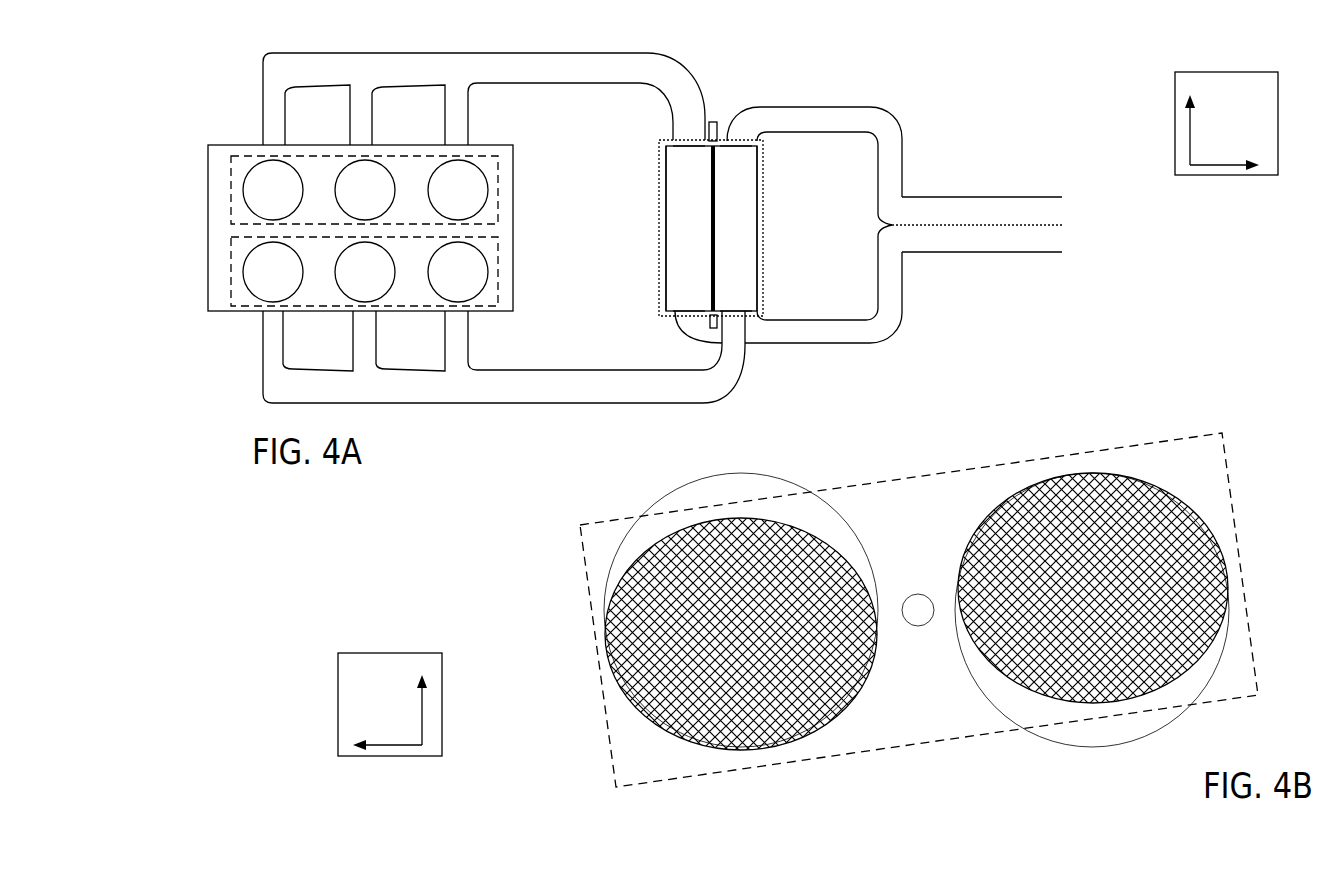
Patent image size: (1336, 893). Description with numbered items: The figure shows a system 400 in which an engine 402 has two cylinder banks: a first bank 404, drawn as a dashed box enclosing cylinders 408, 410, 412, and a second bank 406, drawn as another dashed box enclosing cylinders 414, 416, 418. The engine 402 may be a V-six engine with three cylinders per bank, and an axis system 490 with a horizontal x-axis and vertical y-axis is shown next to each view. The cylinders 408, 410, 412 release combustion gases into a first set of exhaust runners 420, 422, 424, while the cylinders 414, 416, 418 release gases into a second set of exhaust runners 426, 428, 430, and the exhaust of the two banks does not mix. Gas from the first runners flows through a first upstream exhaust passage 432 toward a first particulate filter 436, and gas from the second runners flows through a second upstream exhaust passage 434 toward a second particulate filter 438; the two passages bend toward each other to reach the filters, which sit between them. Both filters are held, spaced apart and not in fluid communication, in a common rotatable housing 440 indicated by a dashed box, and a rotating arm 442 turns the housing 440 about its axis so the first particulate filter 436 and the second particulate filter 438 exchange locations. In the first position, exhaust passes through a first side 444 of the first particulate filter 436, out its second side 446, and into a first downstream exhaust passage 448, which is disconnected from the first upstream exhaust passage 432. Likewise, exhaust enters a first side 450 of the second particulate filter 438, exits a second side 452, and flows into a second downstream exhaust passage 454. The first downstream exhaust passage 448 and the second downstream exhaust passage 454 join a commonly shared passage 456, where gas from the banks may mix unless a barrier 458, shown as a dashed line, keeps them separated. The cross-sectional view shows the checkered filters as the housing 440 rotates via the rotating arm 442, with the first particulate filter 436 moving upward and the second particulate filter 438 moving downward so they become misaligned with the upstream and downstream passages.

In FIG. 4A, the system 400 is at (868, 37).
In FIG. 4A, the engine 402 is at (208, 222).
In FIG. 4A, the first bank 404 is at (247, 156).
In FIG. 4A, the second bank 406 is at (247, 305).
In FIG. 4A, the cylinder 408 is at (290, 199).
In FIG. 4A, the cylinder 410 is at (382, 199).
In FIG. 4A, the cylinder 412 is at (475, 199).
In FIG. 4A, the cylinder 414 is at (290, 281).
In FIG. 4A, the cylinder 416 is at (382, 281).
In FIG. 4A, the cylinder 418 is at (475, 281).
In FIG. 4A, the exhaust runner 420 is at (262, 112).
In FIG. 4A, the exhaust runner 422 is at (350, 138).
In FIG. 4A, the exhaust runner 424 is at (445, 134).
In FIG. 4A, the exhaust runner 426 is at (285, 328).
In FIG. 4A, the exhaust runner 428 is at (377, 328).
In FIG. 4A, the exhaust runner 430 is at (468, 328).
In FIG. 4A, the first upstream exhaust passage 432 is at (571, 80).
In FIG. 4B, the first upstream exhaust passage 432 is at (1100, 748).
In FIG. 4A, the second upstream exhaust passage 434 is at (589, 396).
In FIG. 4A, the first particulate filter 436 is at (660, 197).
In FIG. 4B, the first particulate filter 436 is at (1138, 497).
In FIG. 4A, the second particulate filter 438 is at (763, 197).
In FIG. 4A, the rotatable housing 440 is at (763, 235).
In FIG. 4B, the rotatable housing 440 is at (1047, 458).
In FIG. 4A, the rotating arm 442 is at (713, 122).
In FIG. 4B, the rotating arm 442 is at (913, 594).
In FIG. 4A, the first side 444 is at (697, 147).
In FIG. 4B, the first side 444 is at (1215, 552).
In FIG. 4A, the second side 446 is at (680, 309).
In FIG. 4A, the first downstream exhaust passage 448 is at (837, 341).
In FIG. 4B, the first downstream exhaust passage 448 is at (843, 570).
In FIG. 4A, the first side 450 is at (735, 309).
In FIG. 4B, the first side 450 is at (1272, 390).
In FIG. 4A, the second side 452 is at (732, 147).
In FIG. 4B, the second side 452 is at (695, 700).
In FIG. 4A, the second downstream exhaust passage 454 is at (835, 128).
In FIG. 4B, the second downstream exhaust passage 454 is at (788, 482).
In FIG. 4A, the commonly shared passage 456 is at (977, 197).
In FIG. 4A, the barrier 458 is at (1057, 225).
In FIG. 4A, the axis system 490 is at (1255, 72).
In FIG. 4B, the axis system 490 is at (418, 653).